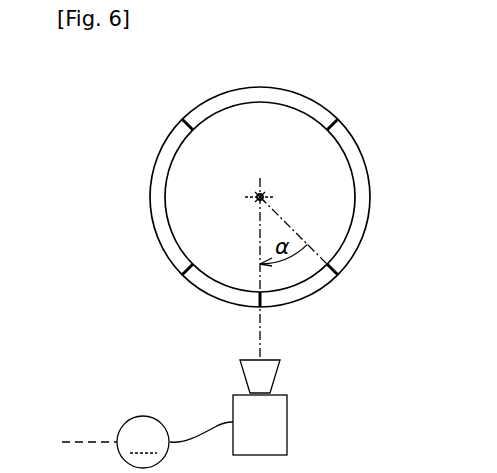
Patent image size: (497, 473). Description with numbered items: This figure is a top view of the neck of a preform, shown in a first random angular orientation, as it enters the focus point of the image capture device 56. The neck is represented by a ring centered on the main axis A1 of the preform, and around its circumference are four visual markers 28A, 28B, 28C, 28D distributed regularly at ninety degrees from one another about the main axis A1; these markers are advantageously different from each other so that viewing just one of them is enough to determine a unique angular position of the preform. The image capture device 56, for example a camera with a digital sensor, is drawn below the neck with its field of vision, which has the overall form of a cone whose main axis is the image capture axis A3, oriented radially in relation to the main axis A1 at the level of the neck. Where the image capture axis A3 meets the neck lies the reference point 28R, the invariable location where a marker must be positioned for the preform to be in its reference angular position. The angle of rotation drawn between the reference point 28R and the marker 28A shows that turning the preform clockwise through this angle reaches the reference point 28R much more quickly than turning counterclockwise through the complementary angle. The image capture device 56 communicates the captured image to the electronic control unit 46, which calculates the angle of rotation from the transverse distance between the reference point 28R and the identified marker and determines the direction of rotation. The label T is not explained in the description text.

The visual marker 28A is at (335, 268).
The visual marker 28B is at (187, 267).
The visual marker 28C is at (191, 121).
The visual marker 28D is at (333, 119).
The reference point 28R is at (263, 300).
The electronic control unit 46 is at (147, 442).
The image capture device 56 is at (260, 432).
The main axis A1 is at (262, 196).
The image capture axis A3 is at (259, 333).
The target T is at (260, 197).